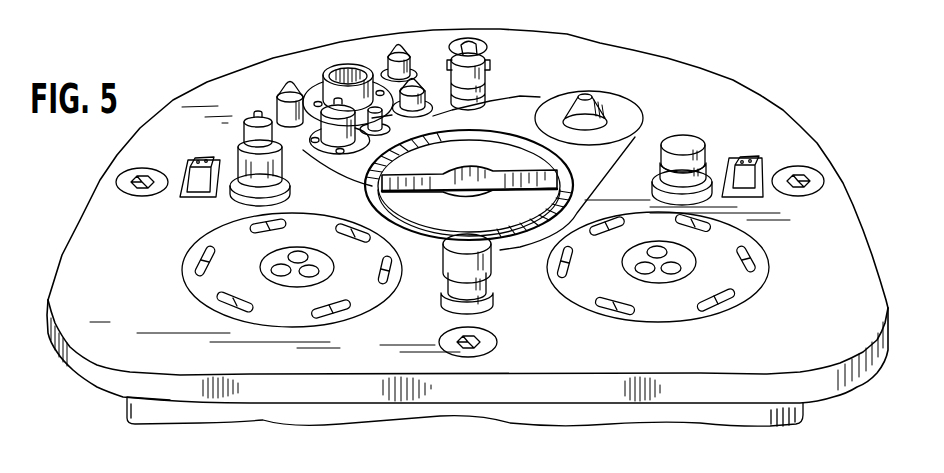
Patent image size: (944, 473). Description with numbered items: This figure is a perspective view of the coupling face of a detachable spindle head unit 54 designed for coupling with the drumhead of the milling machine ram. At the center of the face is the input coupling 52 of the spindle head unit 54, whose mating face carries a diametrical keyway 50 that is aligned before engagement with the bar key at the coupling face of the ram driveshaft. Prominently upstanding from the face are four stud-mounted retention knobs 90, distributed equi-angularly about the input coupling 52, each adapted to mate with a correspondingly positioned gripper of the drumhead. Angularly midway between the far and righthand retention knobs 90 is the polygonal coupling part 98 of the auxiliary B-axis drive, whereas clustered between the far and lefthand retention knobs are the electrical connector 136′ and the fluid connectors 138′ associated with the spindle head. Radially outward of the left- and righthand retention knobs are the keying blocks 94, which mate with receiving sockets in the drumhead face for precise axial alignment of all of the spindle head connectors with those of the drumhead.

The diametrical keyway 50 is at (404, 180).
The input coupling 52 is at (477, 223).
The spindle head unit 54 is at (140, 408).
The retention knob 90 is at (488, 70).
The keying block 94 is at (188, 175).
The polygonal coupling part 98 is at (610, 106).
The electrical connector 136′ is at (340, 72).
The fluid connector 138′ is at (276, 111).